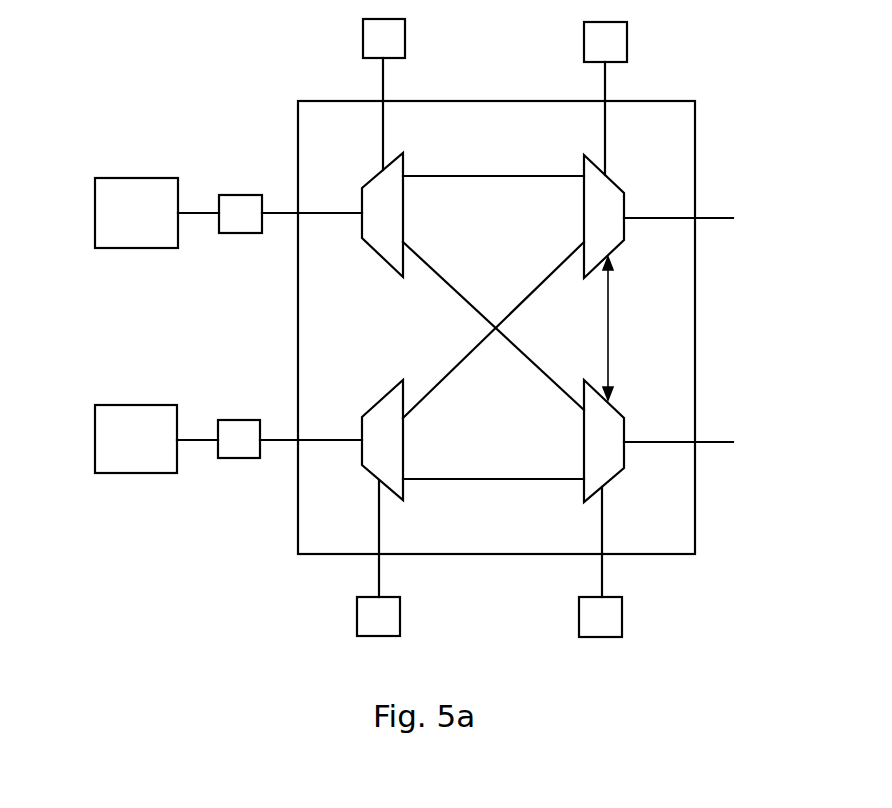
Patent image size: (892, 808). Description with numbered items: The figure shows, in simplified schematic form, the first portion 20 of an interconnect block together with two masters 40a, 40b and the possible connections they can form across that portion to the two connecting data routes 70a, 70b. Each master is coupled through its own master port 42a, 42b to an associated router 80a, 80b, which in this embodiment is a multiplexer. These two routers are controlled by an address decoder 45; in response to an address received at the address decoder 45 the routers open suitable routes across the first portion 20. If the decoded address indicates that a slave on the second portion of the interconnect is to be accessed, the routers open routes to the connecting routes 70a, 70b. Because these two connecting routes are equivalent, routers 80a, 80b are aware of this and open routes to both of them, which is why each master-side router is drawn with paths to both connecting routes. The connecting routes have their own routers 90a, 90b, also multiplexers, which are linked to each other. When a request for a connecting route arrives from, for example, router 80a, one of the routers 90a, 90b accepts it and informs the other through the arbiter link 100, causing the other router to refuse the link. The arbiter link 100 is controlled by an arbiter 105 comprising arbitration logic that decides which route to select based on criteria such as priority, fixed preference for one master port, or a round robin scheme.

The first portion 20 is at (500, 101).
The master 40a is at (135, 248).
The master 40b is at (135, 473).
The master port 42a is at (240, 233).
The master port 42b is at (240, 458).
The address decoder 45 is at (405, 38).
The router 80a is at (362, 190).
The router 80b is at (362, 465).
The router 90a is at (624, 192).
The router 90b is at (624, 468).
The connecting data route 70a is at (705, 221).
The connecting data route 70b is at (705, 446).
The arbiter link 100 is at (608, 328).
The arbiter 105 is at (627, 40).